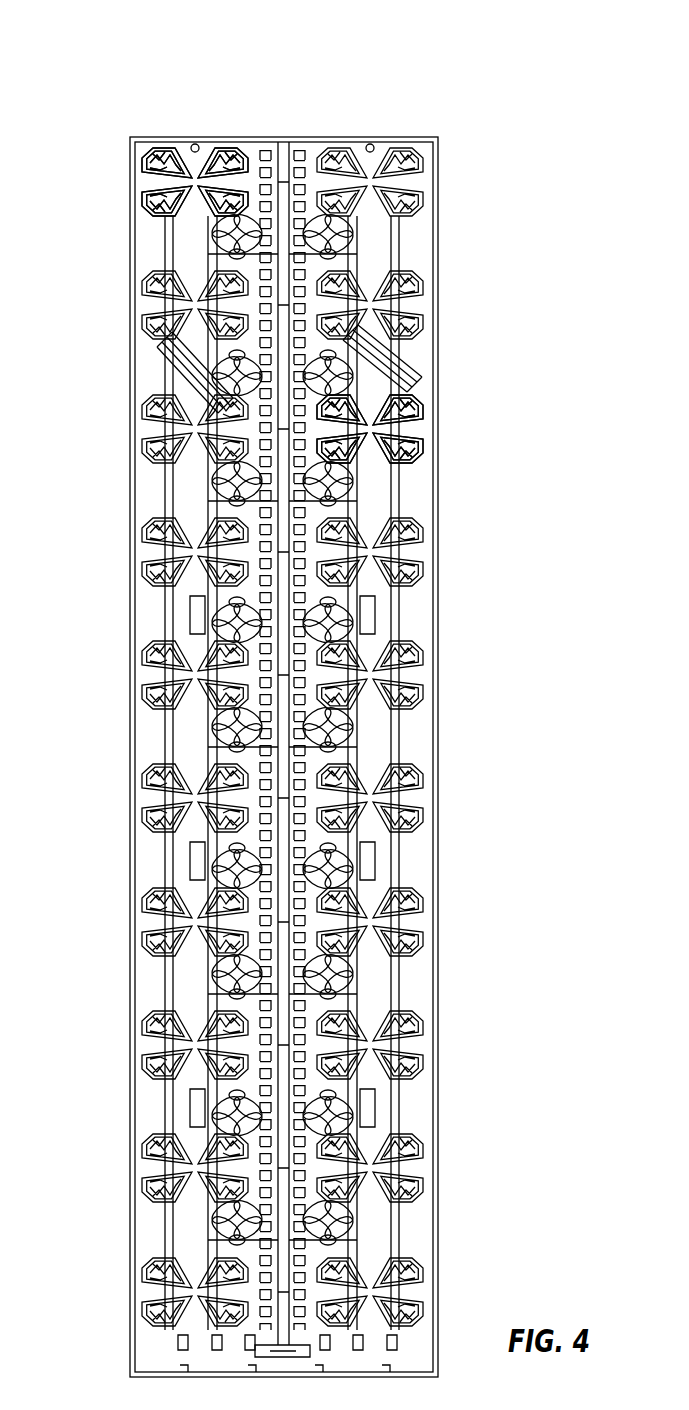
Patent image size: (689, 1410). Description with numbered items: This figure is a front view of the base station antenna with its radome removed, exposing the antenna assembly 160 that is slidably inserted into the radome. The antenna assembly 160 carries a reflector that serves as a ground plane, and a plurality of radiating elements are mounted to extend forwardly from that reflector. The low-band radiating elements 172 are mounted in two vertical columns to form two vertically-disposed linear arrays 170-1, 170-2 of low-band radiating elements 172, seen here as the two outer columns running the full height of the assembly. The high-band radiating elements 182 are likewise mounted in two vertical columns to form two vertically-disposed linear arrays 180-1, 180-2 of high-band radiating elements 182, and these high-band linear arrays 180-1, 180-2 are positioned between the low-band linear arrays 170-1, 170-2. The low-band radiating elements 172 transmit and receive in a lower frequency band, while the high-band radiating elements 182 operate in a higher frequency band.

The antenna assembly 160 is at (78, 245).
The first linear array of low-band radiating elements 170-1 is at (194, 118).
The second linear array of low-band radiating elements 170-2 is at (375, 118).
The low-band radiating element 172 is at (147, 153).
The first linear array of high-band radiating elements 180-1 is at (245, 118).
The second linear array of high-band radiating elements 180-2 is at (327, 118).
The high-band radiating element 182 is at (215, 612).